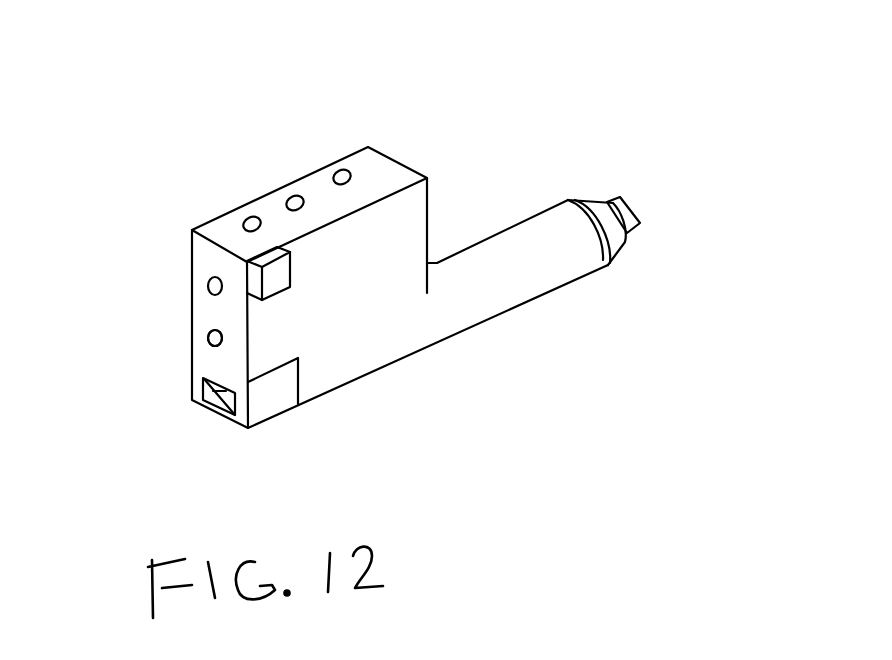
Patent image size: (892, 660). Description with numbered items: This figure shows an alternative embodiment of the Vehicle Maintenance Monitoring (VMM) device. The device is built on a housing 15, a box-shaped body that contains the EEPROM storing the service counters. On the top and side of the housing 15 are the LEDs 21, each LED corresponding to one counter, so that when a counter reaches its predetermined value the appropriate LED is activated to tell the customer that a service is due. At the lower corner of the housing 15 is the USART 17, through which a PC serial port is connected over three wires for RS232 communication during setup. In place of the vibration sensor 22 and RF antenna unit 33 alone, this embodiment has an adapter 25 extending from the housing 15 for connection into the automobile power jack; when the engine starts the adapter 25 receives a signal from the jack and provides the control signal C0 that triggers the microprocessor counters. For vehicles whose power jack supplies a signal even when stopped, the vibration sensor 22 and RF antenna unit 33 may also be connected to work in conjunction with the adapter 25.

The housing 15 is at (375, 147).
The LEDs 21 is at (203, 282).
The RF antenna unit 33 is at (268, 273).
The adapter 25 is at (605, 203).
The vibration sensor 22 is at (288, 399).
The USART 17 is at (192, 402).
The element LED is at (207, 342).